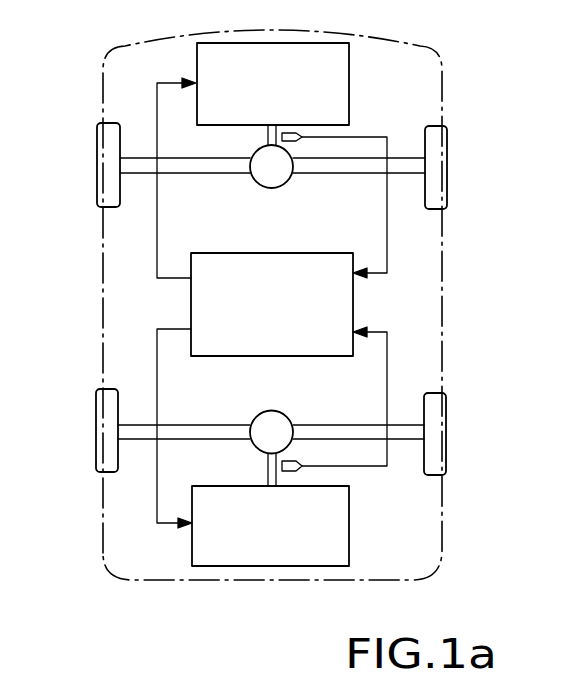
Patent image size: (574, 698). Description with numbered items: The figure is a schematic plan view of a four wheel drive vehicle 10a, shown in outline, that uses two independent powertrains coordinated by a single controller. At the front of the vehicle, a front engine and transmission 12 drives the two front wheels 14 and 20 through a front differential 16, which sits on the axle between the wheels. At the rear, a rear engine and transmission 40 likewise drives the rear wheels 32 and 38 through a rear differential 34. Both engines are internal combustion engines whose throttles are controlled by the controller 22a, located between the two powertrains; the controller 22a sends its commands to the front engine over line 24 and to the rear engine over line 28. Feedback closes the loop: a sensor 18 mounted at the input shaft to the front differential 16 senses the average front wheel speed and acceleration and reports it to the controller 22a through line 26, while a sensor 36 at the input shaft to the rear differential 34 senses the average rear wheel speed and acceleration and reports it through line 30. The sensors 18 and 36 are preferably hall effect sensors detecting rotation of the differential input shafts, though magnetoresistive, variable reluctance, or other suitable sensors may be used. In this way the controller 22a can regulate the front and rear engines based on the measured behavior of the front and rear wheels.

The vehicle 10a is at (101, 43).
The front engine and transmission 12 is at (297, 44).
The front wheel 14 is at (97, 150).
The differential 16 is at (270, 178).
The sensor 18 is at (300, 140).
The front wheel 20 is at (447, 180).
The controller 22a is at (340, 323).
The line 24 is at (157, 231).
The line 26 is at (388, 197).
The line 28 is at (155, 415).
The line 30 is at (388, 398).
The rear wheel 32 is at (96, 410).
The differential 34 is at (270, 416).
The sensor 36 is at (293, 462).
The rear wheel 38 is at (447, 438).
The rear engine and transmission 40 is at (283, 567).